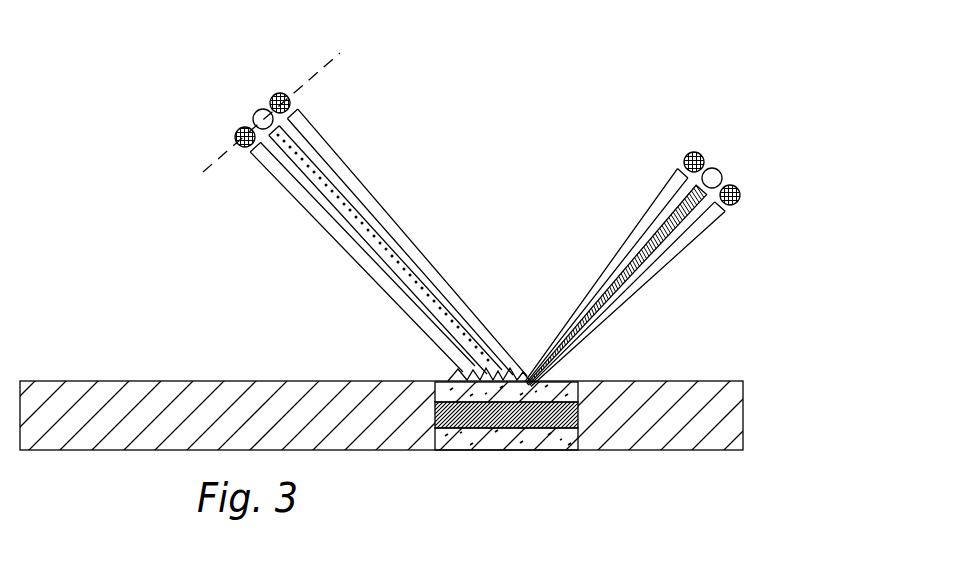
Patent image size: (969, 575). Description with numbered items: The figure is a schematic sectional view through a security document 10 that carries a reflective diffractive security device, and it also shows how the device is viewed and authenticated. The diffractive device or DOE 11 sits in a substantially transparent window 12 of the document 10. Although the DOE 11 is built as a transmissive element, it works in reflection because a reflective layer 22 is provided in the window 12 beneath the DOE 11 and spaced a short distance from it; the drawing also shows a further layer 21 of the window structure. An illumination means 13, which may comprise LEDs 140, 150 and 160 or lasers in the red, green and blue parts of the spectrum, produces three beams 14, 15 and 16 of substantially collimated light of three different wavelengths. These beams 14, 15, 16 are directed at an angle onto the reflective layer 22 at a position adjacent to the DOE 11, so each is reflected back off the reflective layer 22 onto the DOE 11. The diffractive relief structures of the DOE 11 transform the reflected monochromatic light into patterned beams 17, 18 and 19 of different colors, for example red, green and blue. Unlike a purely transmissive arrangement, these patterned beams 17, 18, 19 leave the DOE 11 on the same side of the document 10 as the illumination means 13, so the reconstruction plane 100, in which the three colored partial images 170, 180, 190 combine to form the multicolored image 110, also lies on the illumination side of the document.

The security document 10 is at (128, 398).
The diffractive device or DOE 11 is at (523, 370).
The window 12 is at (550, 438).
The illumination means 13 is at (747, 178).
The beam 14 is at (625, 302).
The beam 15 is at (676, 228).
The beam 16 is at (621, 248).
The patterned beam 17 is at (360, 266).
The patterned beam 18 is at (421, 283).
The patterned beam 19 is at (386, 229).
The top layer of cell 21 is at (447, 398).
The reflective layer 22 is at (468, 415).
The reconstruction plane 100 is at (304, 92).
The multicolored image 110 is at (318, 73).
The LED 140 is at (740, 188).
The LED 150 is at (720, 170).
The LED 160 is at (690, 152).
The colored partial image 170 is at (233, 134).
The colored partial image 180 is at (253, 113).
The colored partial image 190 is at (277, 91).